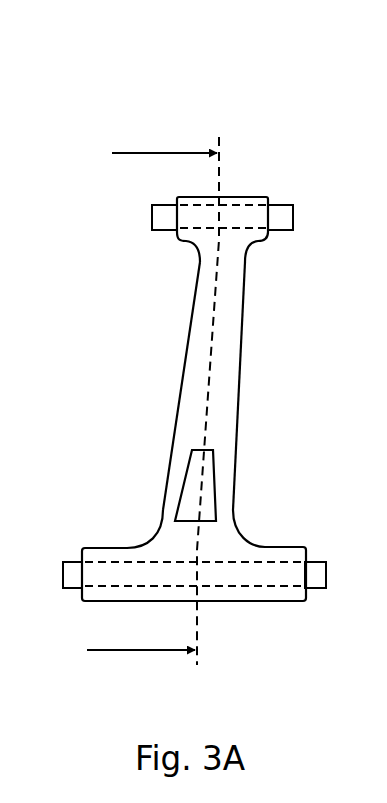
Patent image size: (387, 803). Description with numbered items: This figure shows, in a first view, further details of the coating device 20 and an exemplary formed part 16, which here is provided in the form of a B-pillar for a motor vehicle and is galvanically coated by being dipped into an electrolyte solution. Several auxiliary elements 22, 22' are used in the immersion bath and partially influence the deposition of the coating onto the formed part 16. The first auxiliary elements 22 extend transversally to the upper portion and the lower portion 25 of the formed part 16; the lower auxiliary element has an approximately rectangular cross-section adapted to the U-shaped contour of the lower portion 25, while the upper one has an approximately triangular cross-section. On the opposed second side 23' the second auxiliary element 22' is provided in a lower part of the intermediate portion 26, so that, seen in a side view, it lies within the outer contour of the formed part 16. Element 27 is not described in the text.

The coating device 20 is at (216, 366).
The formed part 16 is at (254, 190).
The first auxiliary elements 22 is at (220, 431).
The second auxiliary element 22' is at (246, 485).
The second side 23' is at (286, 386).
The lower portion 25 is at (192, 243).
The intermediate portion 26 is at (125, 547).
The web side wall 27 is at (193, 391).